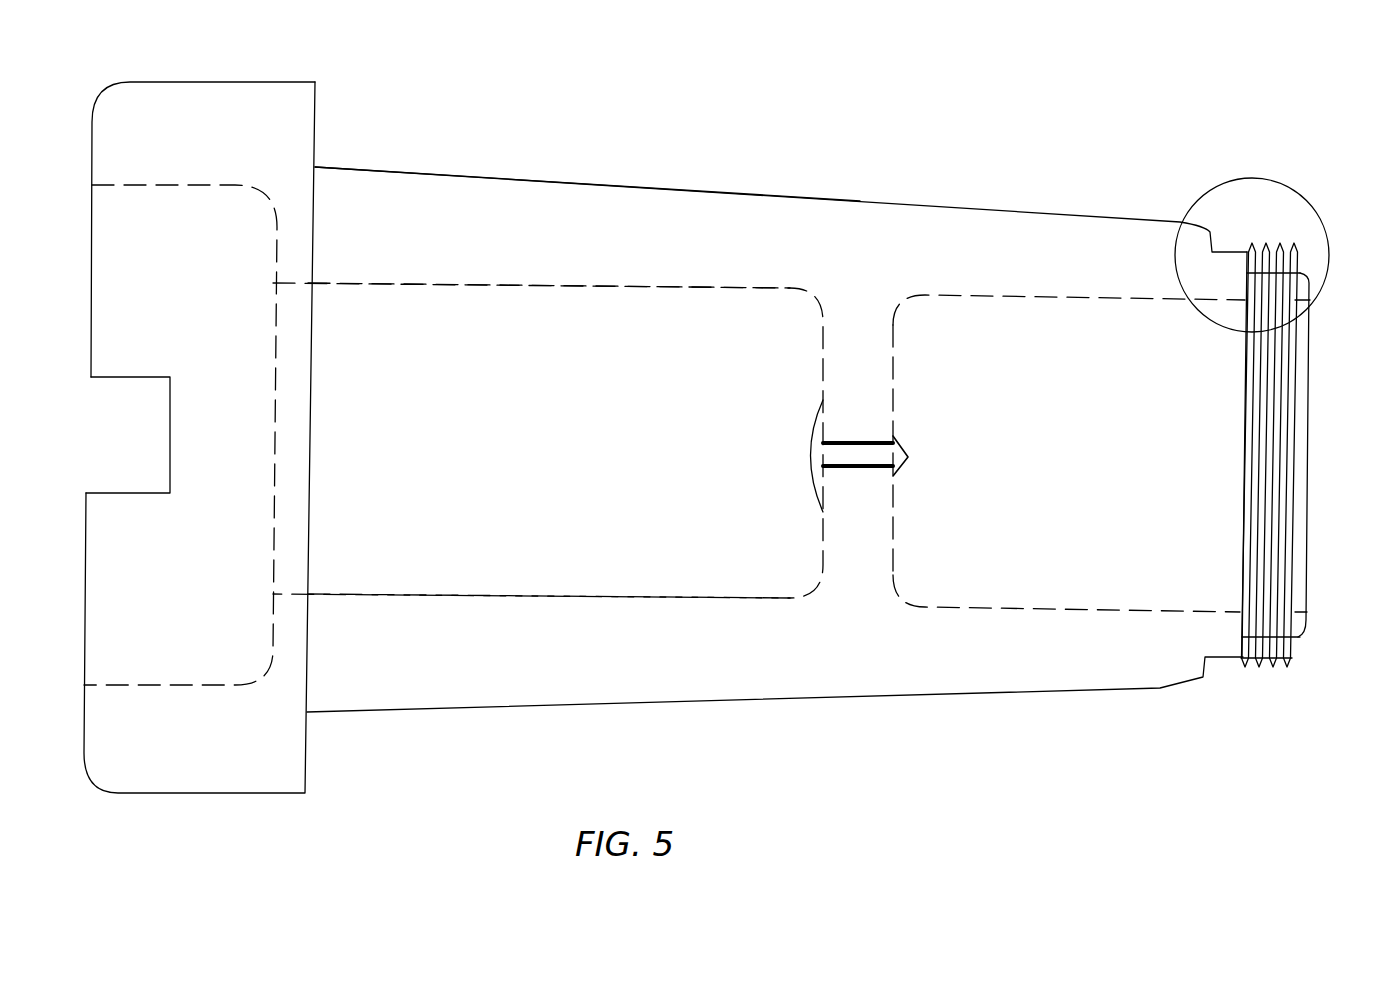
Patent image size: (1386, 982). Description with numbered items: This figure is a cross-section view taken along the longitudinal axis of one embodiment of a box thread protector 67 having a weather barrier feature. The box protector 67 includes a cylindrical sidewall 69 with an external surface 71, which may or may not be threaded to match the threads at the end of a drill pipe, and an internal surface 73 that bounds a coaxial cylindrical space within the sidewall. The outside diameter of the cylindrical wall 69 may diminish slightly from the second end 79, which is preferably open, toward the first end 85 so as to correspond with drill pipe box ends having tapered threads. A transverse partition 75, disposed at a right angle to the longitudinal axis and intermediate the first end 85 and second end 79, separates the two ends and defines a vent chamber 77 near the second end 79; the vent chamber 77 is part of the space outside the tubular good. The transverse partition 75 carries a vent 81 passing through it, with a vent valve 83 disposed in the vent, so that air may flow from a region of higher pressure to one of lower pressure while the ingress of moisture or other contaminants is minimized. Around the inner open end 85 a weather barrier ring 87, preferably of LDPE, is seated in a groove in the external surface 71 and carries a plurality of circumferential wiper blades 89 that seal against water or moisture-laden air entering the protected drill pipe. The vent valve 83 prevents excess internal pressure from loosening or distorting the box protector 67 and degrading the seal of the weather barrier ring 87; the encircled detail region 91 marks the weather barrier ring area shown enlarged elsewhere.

The box thread protector 67 is at (272, 82).
The cylindrical sidewall 69 is at (560, 197).
The external surface 71 is at (858, 201).
The internal surface 73 is at (493, 284).
The transverse partition 75 is at (860, 538).
The vent chamber 77 is at (518, 447).
The second end 79 is at (88, 219).
The vent 81 is at (866, 443).
The vent valve 83 is at (810, 432).
The first end 85 is at (1314, 405).
The weather barrier ring 87 is at (1258, 455).
The circumferential wiper blades 89 is at (1290, 658).
The detail circle 91 is at (1265, 180).